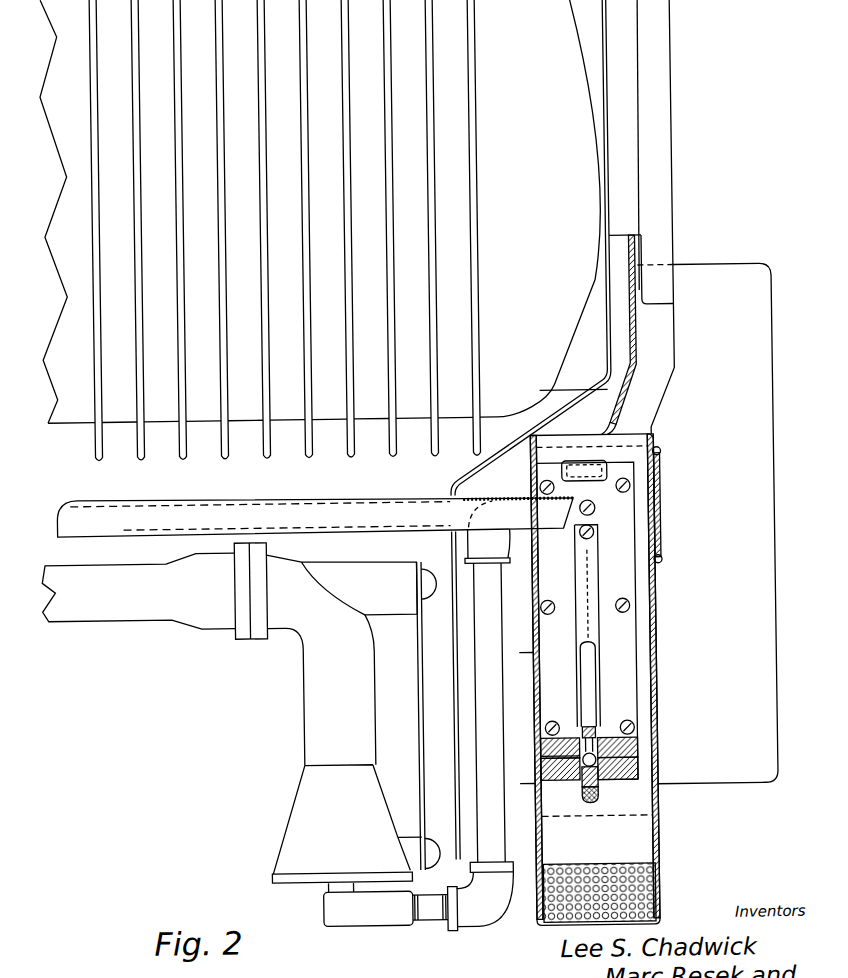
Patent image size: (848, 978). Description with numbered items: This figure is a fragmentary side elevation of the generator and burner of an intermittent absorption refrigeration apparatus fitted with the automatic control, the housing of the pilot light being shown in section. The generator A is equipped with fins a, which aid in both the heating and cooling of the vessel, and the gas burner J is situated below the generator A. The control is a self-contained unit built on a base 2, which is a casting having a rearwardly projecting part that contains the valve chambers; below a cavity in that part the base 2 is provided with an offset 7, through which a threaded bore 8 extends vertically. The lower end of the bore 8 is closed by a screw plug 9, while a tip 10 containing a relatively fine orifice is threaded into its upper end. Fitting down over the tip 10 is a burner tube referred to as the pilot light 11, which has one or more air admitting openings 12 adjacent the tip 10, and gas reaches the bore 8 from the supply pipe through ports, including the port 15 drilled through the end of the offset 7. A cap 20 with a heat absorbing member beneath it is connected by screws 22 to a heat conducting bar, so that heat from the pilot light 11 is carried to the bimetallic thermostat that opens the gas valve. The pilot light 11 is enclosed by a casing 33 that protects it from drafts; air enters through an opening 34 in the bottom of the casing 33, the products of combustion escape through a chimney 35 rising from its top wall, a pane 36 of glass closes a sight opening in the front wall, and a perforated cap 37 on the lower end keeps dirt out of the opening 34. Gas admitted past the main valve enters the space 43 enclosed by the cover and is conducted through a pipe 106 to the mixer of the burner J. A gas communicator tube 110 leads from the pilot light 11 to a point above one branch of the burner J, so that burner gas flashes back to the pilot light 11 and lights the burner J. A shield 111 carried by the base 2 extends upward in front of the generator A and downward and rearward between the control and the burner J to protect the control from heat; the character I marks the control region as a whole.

The fins a is at (379, 212).
The generator A is at (323, 211).
The gas burner J is at (135, 601).
The shield 111 is at (611, 80).
The chimney 35 is at (671, 146).
The base 2 is at (628, 253).
The space 43 is at (746, 438).
The casing 33 is at (653, 646).
The pane 36 is at (661, 508).
The cap 20 is at (583, 469).
The screws 22 is at (595, 519).
The pilot light 11 is at (589, 577).
The tip 10 is at (633, 746).
The port 15 is at (586, 762).
The screw plug 9 is at (594, 795).
The offset 7 is at (621, 778).
The threaded bore 8 is at (536, 759).
The air admitting openings 12 is at (574, 722).
The indicator I is at (706, 800).
The opening 34 is at (608, 860).
The perforated cap 37 is at (648, 883).
The gas communicator tube 110 is at (313, 512).
The pipe 106 is at (473, 661).